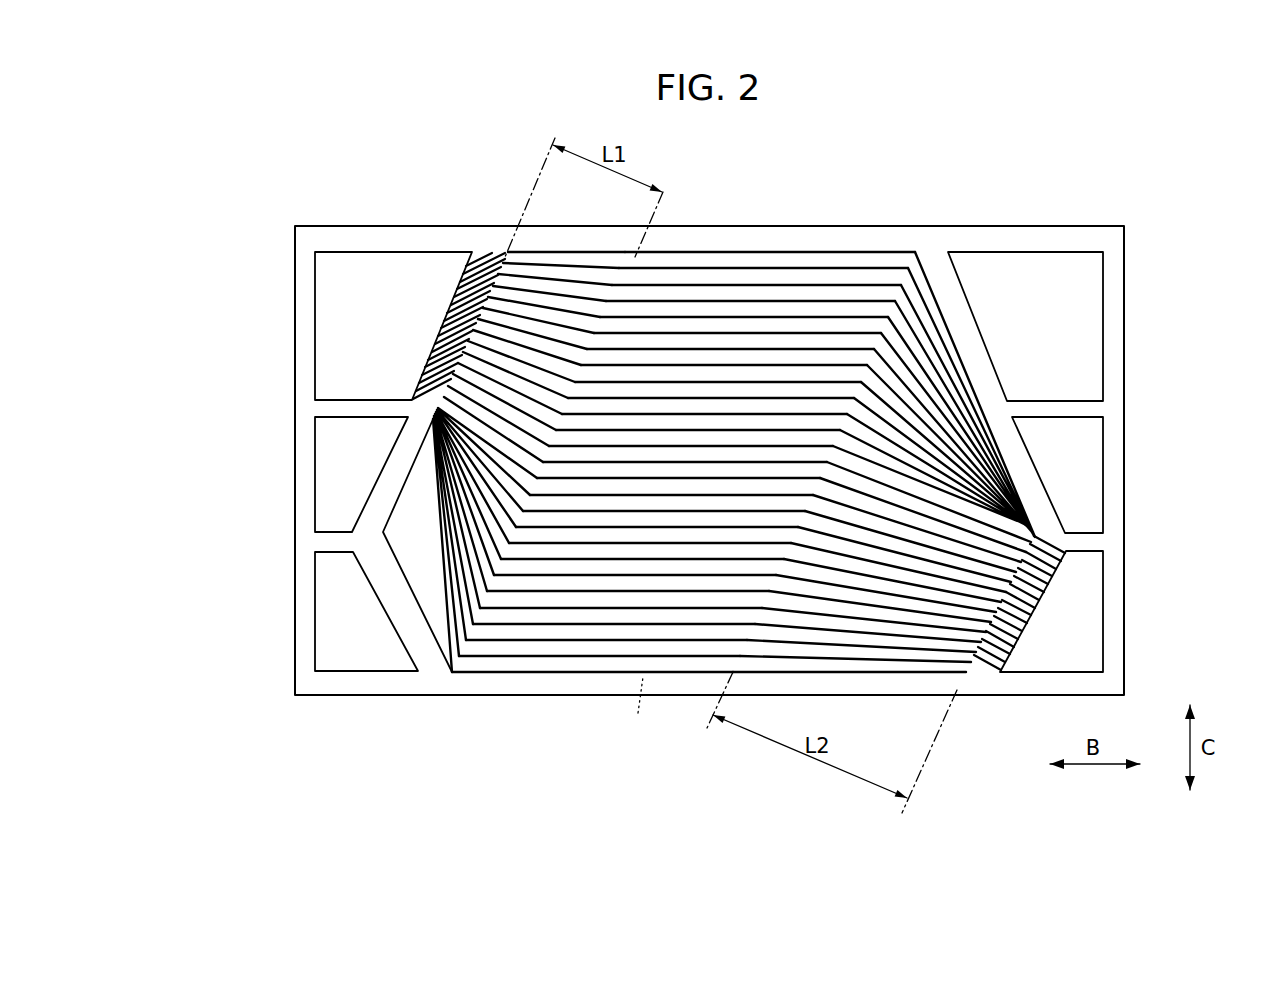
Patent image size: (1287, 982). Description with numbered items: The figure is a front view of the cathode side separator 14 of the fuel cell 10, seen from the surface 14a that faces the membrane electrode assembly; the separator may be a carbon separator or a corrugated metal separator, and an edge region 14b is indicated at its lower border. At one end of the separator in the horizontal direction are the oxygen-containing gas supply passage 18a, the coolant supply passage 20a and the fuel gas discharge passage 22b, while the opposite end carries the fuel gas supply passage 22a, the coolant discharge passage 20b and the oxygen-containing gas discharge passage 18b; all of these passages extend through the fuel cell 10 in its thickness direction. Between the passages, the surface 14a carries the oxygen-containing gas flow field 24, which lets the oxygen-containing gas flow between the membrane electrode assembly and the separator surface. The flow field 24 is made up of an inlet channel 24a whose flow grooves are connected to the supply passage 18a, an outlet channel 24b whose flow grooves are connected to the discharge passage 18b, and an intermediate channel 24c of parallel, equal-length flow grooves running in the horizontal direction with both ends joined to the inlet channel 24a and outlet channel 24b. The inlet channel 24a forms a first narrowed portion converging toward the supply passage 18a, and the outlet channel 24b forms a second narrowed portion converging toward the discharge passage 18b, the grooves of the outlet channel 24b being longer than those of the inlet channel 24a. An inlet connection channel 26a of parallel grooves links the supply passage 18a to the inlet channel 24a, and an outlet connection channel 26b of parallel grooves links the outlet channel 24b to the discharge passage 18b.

The fuel cell 10 is at (1080, 160).
The cathode side separator 14 is at (1042, 160).
The surface 14a is at (592, 678).
The edge of the first separator 14b is at (640, 711).
The oxygen-containing gas supply passage 18a is at (393, 326).
The oxygen-containing gas discharge passage 18b is at (1051, 611).
The coolant supply passage 20a is at (270, 492).
The coolant discharge passage 20b is at (1145, 492).
The fuel gas supply passage 22a is at (1025, 326).
The fuel gas discharge passage 22b is at (366, 611).
The oxygen-containing gas flow field 24 is at (734, 466).
The inlet channel 24a is at (575, 273).
The outlet channel 24b is at (923, 605).
The intermediate channel 24c is at (737, 305).
The inlet connection channel 26a is at (475, 288).
The outlet connection channel 26b is at (993, 650).